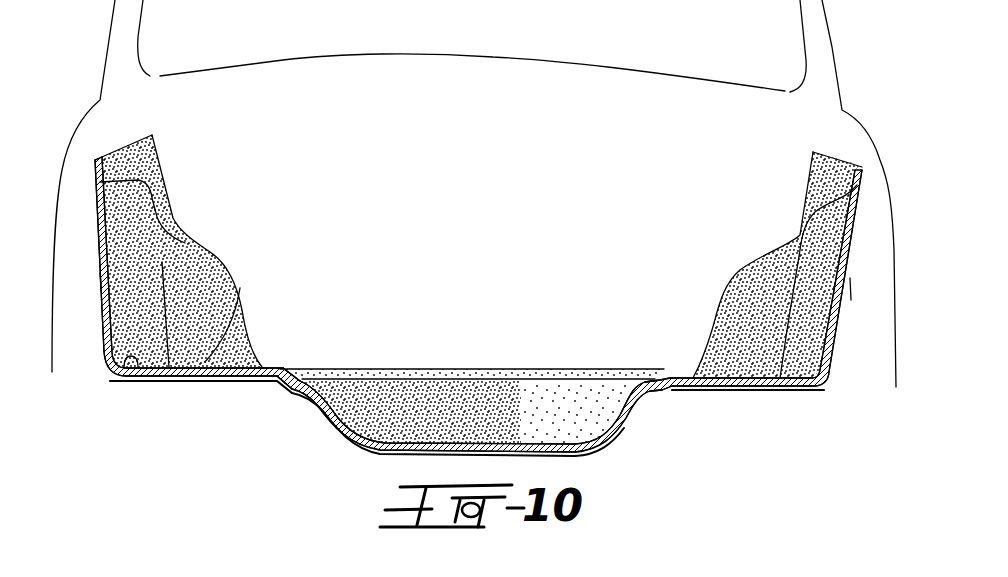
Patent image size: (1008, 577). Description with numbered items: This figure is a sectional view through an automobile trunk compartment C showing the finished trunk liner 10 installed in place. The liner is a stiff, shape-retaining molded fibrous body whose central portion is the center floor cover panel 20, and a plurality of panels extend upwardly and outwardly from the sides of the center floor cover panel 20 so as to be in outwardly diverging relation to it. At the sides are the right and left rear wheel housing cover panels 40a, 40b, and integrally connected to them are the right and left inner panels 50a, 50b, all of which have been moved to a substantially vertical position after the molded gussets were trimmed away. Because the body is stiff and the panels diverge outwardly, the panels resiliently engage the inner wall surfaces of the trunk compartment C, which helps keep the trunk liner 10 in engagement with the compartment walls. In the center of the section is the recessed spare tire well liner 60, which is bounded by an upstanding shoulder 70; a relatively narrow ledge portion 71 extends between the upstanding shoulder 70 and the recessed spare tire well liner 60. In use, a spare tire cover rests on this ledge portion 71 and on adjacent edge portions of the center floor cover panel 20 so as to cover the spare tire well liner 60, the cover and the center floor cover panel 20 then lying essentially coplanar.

The trunk liner 10 is at (724, 197).
The center floor cover panel 20 is at (240, 310).
The right rear wheel housing cover panel 40a is at (750, 265).
The left rear wheel housing cover panel 40b is at (183, 237).
The right inner panel 50a is at (840, 330).
The left inner panel 50b is at (108, 300).
The spare tire well liner 60 is at (370, 437).
The upstanding shoulder 70 is at (300, 369).
The ledge portion 71 is at (540, 377).
The trunk compartment C is at (118, 378).